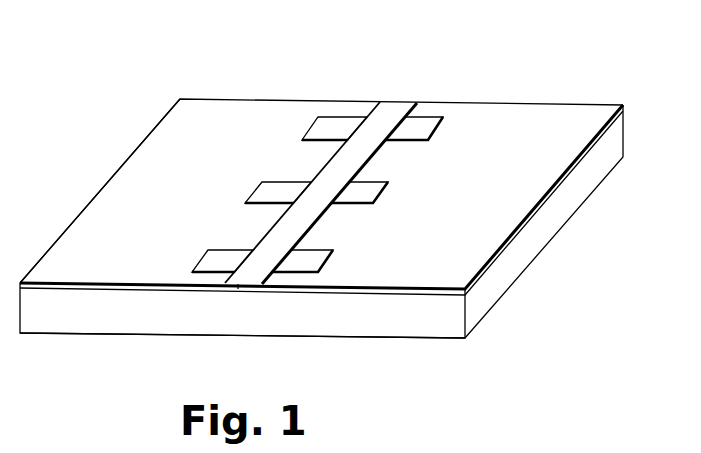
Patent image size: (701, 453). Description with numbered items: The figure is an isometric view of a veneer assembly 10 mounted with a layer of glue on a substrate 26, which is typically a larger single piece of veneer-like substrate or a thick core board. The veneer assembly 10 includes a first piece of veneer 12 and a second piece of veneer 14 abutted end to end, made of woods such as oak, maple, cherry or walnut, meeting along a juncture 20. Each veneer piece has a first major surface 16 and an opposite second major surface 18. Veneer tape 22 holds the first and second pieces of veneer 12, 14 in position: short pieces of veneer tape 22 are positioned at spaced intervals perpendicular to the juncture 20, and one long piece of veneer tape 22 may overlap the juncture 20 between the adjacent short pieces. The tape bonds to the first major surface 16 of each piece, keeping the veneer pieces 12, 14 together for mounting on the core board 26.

The veneer assembly 10 is at (323, 200).
The first piece of veneer 12 is at (219, 121).
The second piece of veneer 14 is at (529, 121).
The first major surface 16 is at (118, 212).
The second major surface 18 is at (52, 292).
The juncture 20 is at (238, 292).
The veneer tape 22 is at (422, 125).
The substrate 26 is at (343, 322).